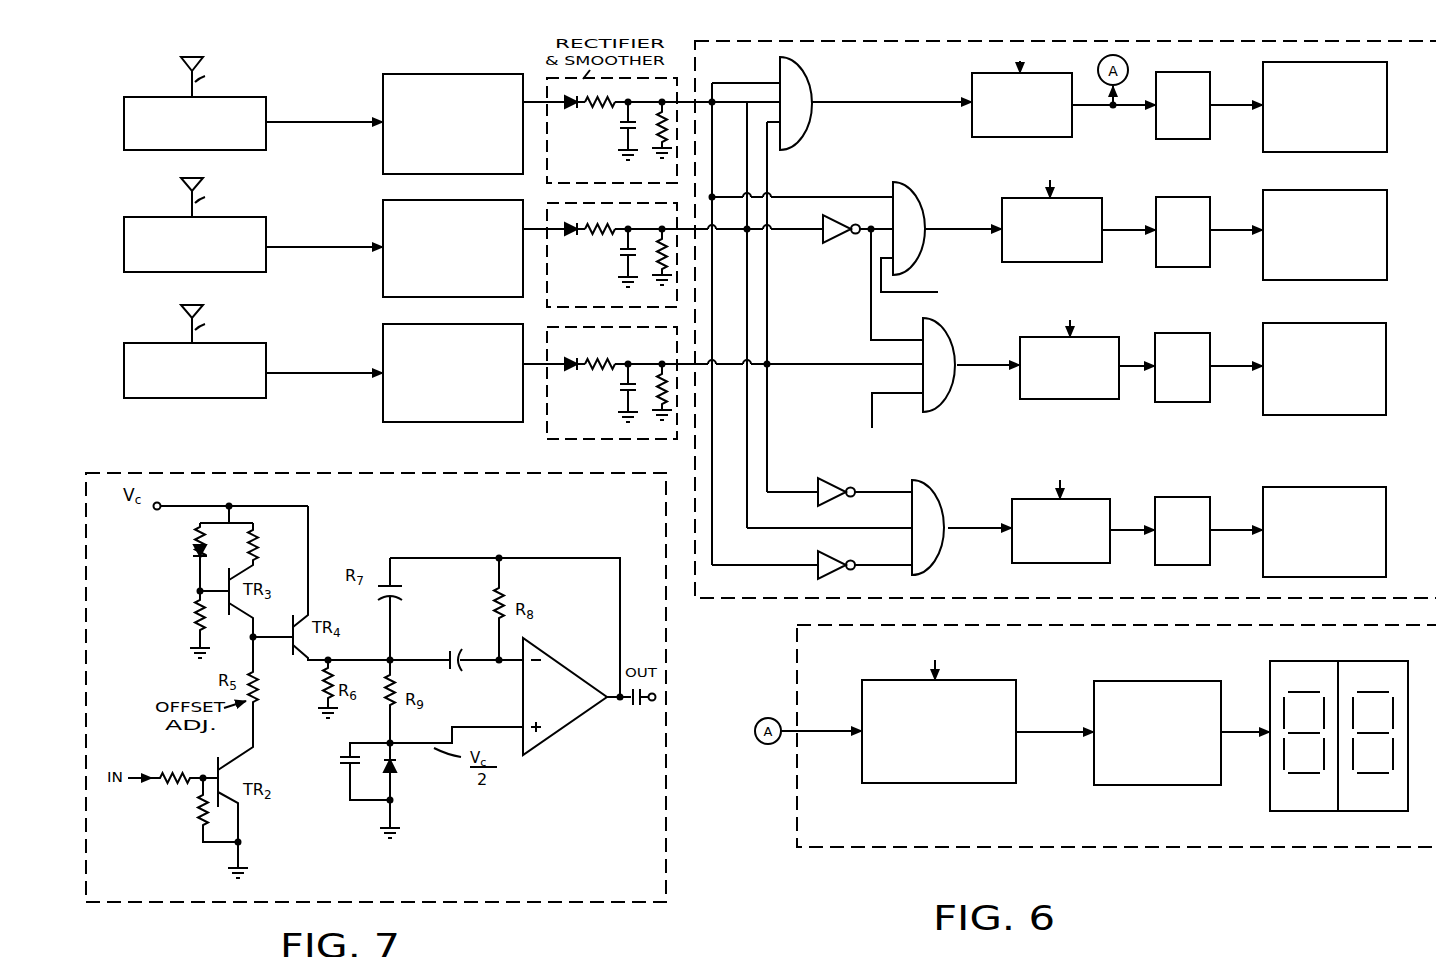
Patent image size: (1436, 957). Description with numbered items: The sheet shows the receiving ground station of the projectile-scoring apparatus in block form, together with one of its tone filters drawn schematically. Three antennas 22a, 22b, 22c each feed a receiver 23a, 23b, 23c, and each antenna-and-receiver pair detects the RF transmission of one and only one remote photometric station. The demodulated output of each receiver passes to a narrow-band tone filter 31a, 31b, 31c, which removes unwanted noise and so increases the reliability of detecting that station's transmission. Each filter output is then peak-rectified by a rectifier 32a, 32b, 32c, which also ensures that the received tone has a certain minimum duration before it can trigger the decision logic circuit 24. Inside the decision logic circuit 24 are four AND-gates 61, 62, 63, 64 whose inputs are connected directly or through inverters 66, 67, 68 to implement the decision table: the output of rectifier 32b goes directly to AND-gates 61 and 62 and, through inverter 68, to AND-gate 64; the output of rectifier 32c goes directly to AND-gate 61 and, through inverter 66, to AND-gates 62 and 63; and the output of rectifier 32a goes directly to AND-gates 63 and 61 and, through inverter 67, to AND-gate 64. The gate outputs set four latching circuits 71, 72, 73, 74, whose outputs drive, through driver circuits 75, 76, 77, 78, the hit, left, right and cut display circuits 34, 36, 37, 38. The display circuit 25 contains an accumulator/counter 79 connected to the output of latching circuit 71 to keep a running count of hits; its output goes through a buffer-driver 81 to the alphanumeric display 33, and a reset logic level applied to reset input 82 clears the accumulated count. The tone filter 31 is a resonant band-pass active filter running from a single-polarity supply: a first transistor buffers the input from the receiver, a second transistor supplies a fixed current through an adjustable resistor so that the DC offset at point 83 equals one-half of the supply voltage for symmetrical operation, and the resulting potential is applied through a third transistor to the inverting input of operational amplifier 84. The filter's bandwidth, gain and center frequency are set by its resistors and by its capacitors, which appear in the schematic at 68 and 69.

In FIG. 6, the antenna 22a is at (269, 324).
In FIG. 6, the antenna 22b is at (264, 77).
In FIG. 6, the antenna 22c is at (264, 197).
In FIG. 6, the receiver 23a is at (195, 370).
In FIG. 6, the receiver 23b is at (195, 123).
In FIG. 6, the receiver 23c is at (195, 244).
In FIG. 6, the tone filter 31a is at (453, 373).
In FIG. 6, the tone filter 31b is at (453, 124).
In FIG. 6, the tone filter 31c is at (453, 248).
In FIG. 7, the tone filter 31 is at (669, 851).
In FIG. 6, the rectifier 32a is at (595, 427).
In FIG. 6, the rectifier 32b is at (593, 172).
In FIG. 6, the rectifier 32c is at (595, 298).
In FIG. 6, the decision logic circuit 24 is at (747, 603).
In FIG. 6, the display circuit 25 is at (794, 813).
In FIG. 6, the AND-gate 61 is at (801, 122).
In FIG. 6, the AND-gate 62 is at (905, 202).
In FIG. 6, the AND-gate 63 is at (947, 349).
In FIG. 6, the AND-gate 64 is at (930, 502).
In FIG. 6, the inverter 66 is at (835, 245).
In FIG. 6, the inverter 67 is at (830, 478).
In FIG. 6, the inverter 68 is at (838, 560).
In FIG. 7, the inverter 68 is at (388, 585).
In FIG. 7, the capacitor 69 is at (450, 663).
In FIG. 6, the latching circuit 71 is at (1022, 92).
In FIG. 6, the latching circuit 72 is at (1052, 213).
In FIG. 6, the latching circuit 73 is at (1069, 352).
In FIG. 6, the latching circuit 74 is at (1061, 513).
In FIG. 6, the driver circuit 75 is at (1183, 105).
In FIG. 6, the driver circuit 76 is at (1183, 232).
In FIG. 6, the driver circuit 77 is at (1182, 367).
In FIG. 6, the driver circuit 78 is at (1182, 531).
In FIG. 6, the display circuit 34 is at (1325, 107).
In FIG. 6, the display circuit 36 is at (1325, 235).
In FIG. 6, the display circuit 37 is at (1324, 369).
In FIG. 6, the display circuit 38 is at (1324, 532).
In FIG. 6, the accumulator/counter 79 is at (939, 731).
In FIG. 6, the buffer-driver 81 is at (1157, 733).
In FIG. 6, the reset input 82 is at (969, 658).
In FIG. 6, the alphanumeric display 33 is at (1267, 676).
In FIG. 7, the point 83 is at (420, 746).
In FIG. 7, the operational amplifier 84 is at (566, 728).